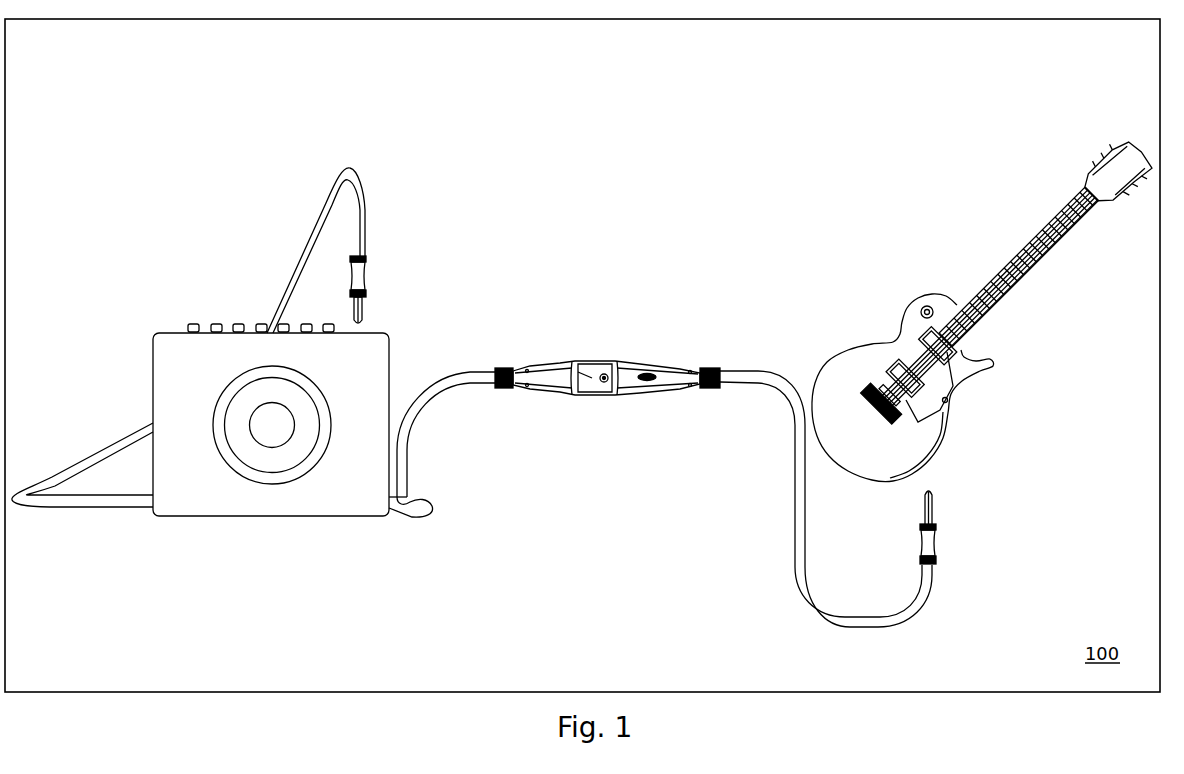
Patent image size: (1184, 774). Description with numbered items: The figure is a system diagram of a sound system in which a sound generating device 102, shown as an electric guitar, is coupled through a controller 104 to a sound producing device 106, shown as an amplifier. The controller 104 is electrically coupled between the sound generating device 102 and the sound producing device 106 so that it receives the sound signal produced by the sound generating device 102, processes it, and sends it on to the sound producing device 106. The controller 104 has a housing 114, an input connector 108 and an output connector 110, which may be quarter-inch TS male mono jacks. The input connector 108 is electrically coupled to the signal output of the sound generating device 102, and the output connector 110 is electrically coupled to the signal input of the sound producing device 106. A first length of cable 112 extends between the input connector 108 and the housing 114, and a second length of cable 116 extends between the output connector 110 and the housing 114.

The sound generating device 102 is at (939, 291).
The controller 104 is at (637, 352).
The sound producing device 106 is at (174, 331).
The input connector 108 is at (936, 505).
The output connector 110 is at (363, 307).
The first length of cable 112 is at (793, 477).
The housing 114 is at (630, 393).
The second length of cable 116 is at (408, 472).